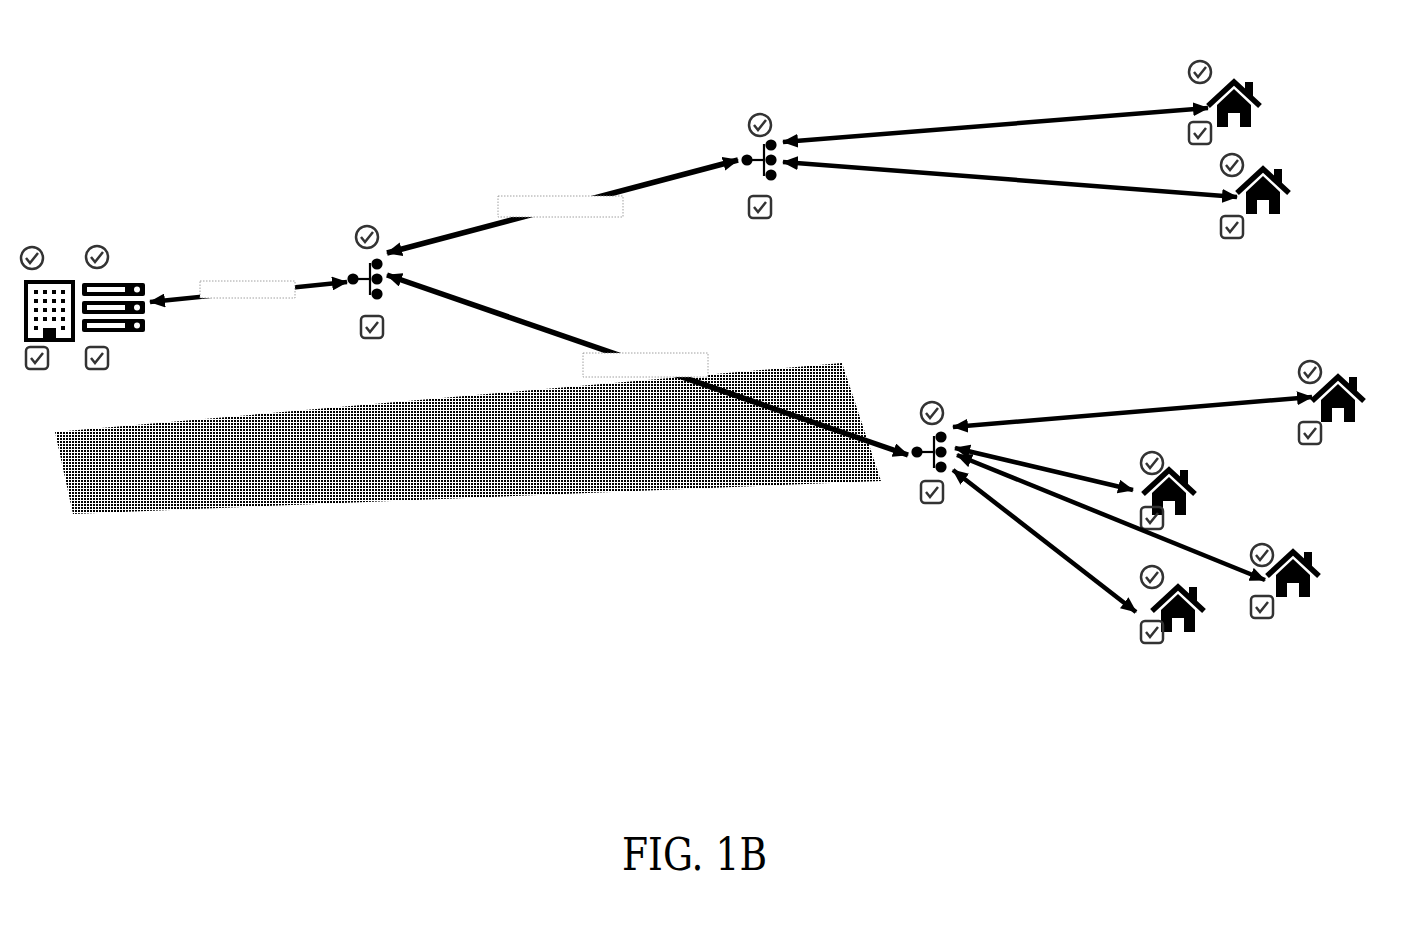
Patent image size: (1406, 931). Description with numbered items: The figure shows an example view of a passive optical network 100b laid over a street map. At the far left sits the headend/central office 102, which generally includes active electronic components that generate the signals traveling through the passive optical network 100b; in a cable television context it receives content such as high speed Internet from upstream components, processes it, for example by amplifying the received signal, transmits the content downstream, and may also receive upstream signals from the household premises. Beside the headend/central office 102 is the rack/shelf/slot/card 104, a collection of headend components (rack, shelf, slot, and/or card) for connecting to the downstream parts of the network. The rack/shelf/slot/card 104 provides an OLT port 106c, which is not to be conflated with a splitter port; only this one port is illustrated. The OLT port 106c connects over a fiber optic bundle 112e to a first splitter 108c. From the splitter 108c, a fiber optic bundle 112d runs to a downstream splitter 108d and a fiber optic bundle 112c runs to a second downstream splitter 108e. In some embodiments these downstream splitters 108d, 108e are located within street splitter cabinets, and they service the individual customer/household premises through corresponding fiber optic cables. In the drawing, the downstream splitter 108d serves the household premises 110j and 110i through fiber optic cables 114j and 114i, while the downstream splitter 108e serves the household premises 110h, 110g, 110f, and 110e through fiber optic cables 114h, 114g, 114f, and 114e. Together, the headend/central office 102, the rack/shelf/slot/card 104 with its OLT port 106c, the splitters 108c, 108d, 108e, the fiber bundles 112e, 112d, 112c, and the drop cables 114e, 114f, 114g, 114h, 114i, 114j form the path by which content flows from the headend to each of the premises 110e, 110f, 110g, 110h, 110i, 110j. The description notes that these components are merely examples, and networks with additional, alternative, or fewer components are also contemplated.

The passive optical network 100b is at (707, 814).
The headend/central office 102 is at (67, 402).
The rack/shelf/slot/card 104 is at (163, 370).
The OLT port 106c is at (216, 370).
The splitter 108c is at (430, 337).
The downstream splitter 108d is at (820, 200).
The downstream splitter 108e is at (987, 529).
The customer/household premises 110e is at (1208, 669).
The customer/household premises 110f is at (1315, 649).
The customer/household premises 110g is at (1173, 525).
The customer/household premises 110h is at (1387, 462).
The customer/household premises 110i is at (1300, 242).
The customer/household premises 110j is at (1303, 150).
The fiber optic bundle 112c is at (697, 404).
The fiber optic bundle 112d is at (683, 218).
The fiber optic bundle 112e is at (310, 323).
The fiber optic cable 114e is at (1073, 582).
The fiber optic cable 114f is at (1133, 554).
The fiber optic cable 114g is at (1127, 480).
The fiber optic cable 114h is at (1272, 440).
The fiber optic cable 114i is at (1130, 229).
The fiber optic cable 114j is at (1142, 145).